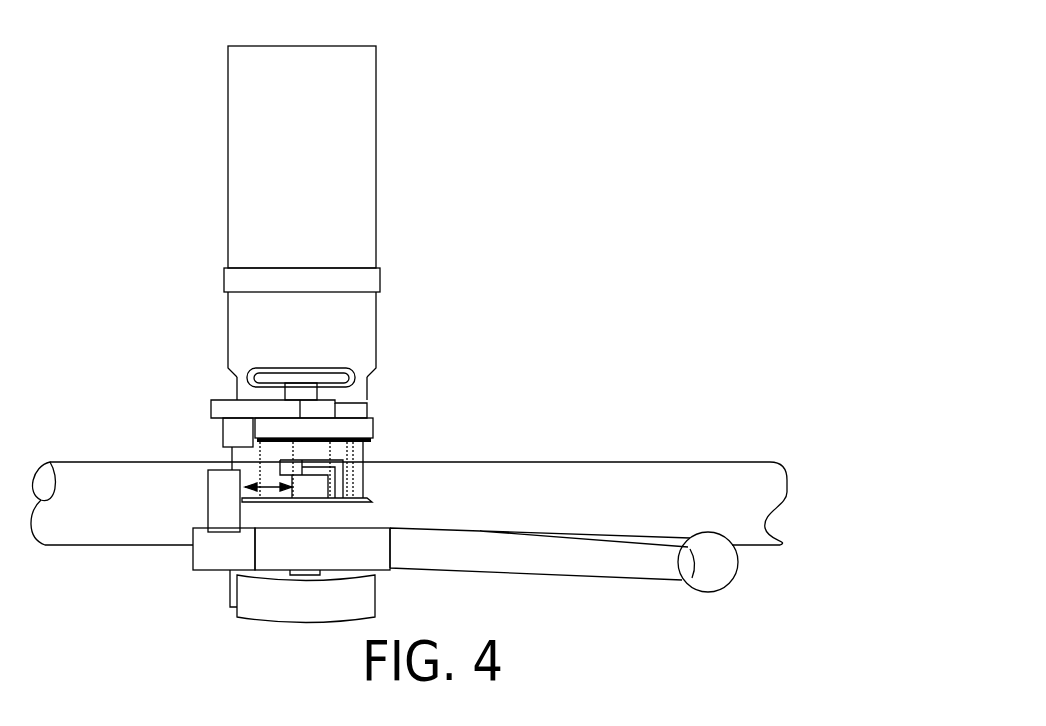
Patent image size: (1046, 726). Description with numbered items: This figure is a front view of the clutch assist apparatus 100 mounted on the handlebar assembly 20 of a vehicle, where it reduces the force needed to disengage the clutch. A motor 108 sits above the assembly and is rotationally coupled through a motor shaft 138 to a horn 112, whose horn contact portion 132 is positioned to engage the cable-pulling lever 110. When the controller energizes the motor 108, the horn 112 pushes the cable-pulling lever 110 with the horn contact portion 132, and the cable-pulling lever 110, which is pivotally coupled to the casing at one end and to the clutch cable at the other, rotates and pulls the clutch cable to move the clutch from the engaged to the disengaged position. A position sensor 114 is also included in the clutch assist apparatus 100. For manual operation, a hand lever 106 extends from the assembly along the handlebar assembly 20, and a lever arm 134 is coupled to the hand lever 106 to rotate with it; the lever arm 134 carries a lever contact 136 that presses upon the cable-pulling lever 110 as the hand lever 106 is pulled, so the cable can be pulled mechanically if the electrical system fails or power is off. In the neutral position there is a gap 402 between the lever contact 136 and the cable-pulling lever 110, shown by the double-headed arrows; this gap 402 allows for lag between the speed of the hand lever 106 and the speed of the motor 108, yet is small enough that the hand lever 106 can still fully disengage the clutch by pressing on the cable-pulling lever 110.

The clutch assist apparatus 100 is at (602, 185).
The motor 108 is at (243, 168).
The motor shaft 138 is at (300, 393).
The horn 112 is at (235, 383).
The cable-pulling lever 110 is at (360, 453).
The horn contact portion 132 is at (225, 432).
The lever contact 136 is at (212, 498).
The lever arm 134 is at (200, 555).
The gap 402 is at (272, 490).
The position sensor 114 is at (253, 615).
The handlebar assembly 20 is at (667, 470).
The hand lever 106 is at (613, 567).